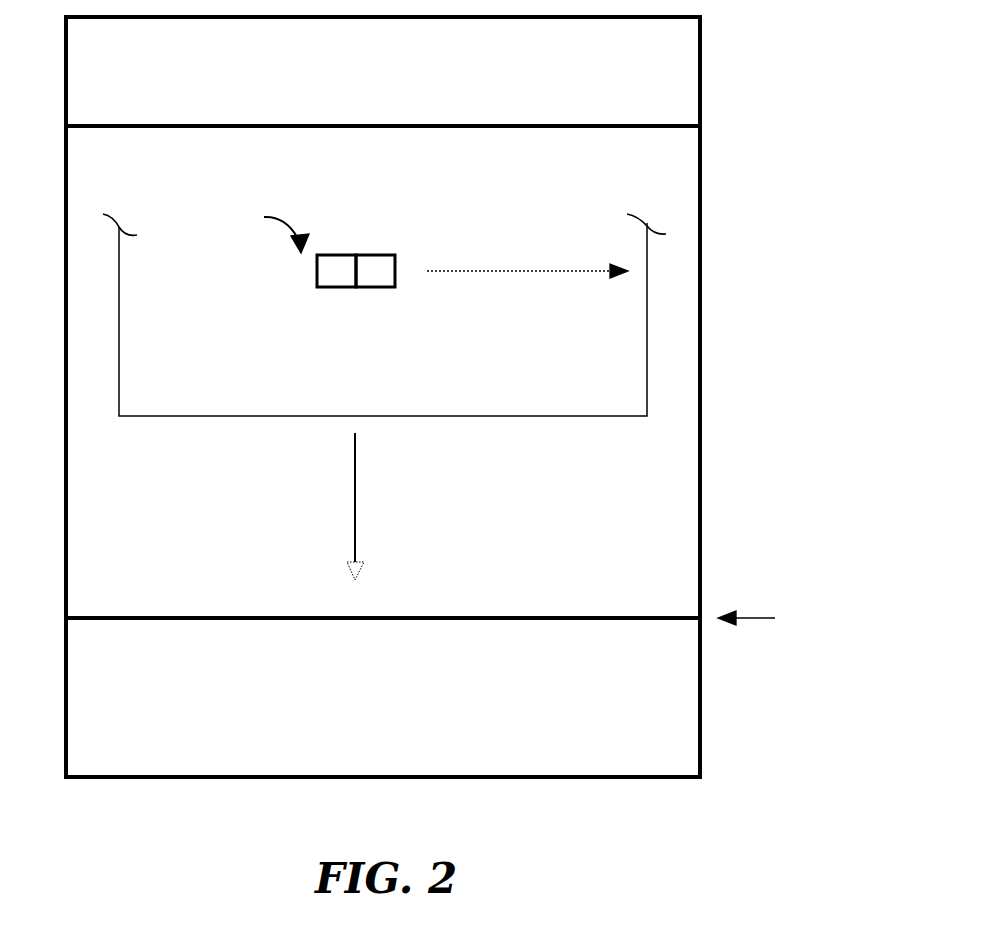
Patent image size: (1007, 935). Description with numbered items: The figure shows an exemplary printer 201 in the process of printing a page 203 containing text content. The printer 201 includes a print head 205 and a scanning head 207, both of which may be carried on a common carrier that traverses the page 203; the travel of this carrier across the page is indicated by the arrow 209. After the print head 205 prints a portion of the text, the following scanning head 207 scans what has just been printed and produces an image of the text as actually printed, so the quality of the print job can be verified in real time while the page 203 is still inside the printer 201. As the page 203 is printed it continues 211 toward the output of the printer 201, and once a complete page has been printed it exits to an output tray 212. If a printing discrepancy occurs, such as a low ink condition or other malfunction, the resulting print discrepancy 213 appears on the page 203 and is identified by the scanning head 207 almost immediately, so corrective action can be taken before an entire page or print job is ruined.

The printer 201 is at (702, 235).
The page 203 is at (648, 325).
The print head 205 is at (372, 256).
The scanning head 207 is at (336, 256).
The scan direction arrow 209 is at (528, 268).
The page continuation direction 211 is at (357, 495).
The output tray 212 is at (682, 724).
The print discrepancy 213 is at (271, 231).